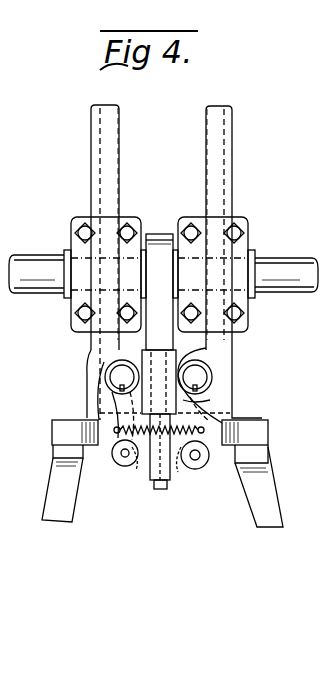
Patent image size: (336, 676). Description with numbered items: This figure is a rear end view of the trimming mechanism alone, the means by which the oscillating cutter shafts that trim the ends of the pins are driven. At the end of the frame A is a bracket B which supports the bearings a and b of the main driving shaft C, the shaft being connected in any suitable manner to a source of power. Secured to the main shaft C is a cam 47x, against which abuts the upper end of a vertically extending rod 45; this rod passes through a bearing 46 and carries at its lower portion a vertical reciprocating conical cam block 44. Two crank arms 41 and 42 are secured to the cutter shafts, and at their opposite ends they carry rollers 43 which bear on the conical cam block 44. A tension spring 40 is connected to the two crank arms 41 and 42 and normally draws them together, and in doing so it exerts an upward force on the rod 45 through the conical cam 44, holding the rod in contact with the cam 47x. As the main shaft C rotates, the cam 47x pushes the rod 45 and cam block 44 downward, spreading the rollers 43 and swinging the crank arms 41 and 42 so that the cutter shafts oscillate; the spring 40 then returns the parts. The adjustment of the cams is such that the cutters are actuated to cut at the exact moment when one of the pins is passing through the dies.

The bearing a is at (130, 217).
The bearing b is at (242, 226).
The frame A is at (52, 465).
The bracket B is at (90, 358).
The main driving shaft C is at (280, 284).
The cam 47x is at (160, 234).
The bearing 46 is at (176, 362).
The crank arm 42 is at (104, 402).
The crank arm 41 is at (215, 399).
The tension spring 40 is at (120, 466).
The rollers 43 is at (200, 467).
The conical cam block 44 is at (150, 470).
The rod 45 is at (165, 482).